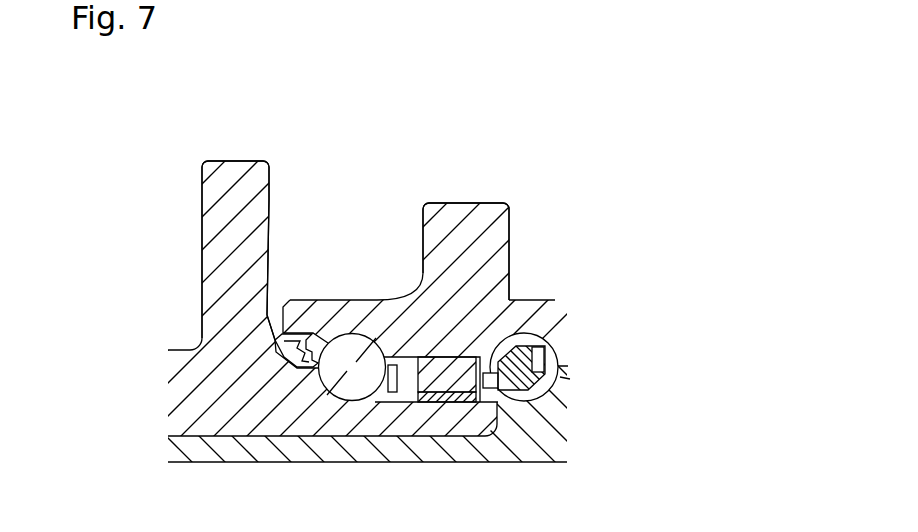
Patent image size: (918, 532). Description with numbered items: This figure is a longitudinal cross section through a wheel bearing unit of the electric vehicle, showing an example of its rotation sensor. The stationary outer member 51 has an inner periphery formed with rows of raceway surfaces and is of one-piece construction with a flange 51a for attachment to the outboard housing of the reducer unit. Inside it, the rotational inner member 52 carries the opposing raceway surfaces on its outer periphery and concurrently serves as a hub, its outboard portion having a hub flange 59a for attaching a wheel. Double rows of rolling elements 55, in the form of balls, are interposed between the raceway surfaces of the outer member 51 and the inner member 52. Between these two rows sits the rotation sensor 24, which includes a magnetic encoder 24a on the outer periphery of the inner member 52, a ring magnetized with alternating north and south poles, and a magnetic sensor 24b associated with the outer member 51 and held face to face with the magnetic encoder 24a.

The inner member 52 is at (197, 395).
The hub flange 59a is at (222, 183).
The outer member 51 is at (378, 292).
The flange 51a is at (457, 215).
The rolling elements 55 is at (349, 348).
The rotation sensor 24 is at (567, 266).
The magnetic sensor 24b is at (447, 365).
The magnetic encoder 24a is at (447, 400).